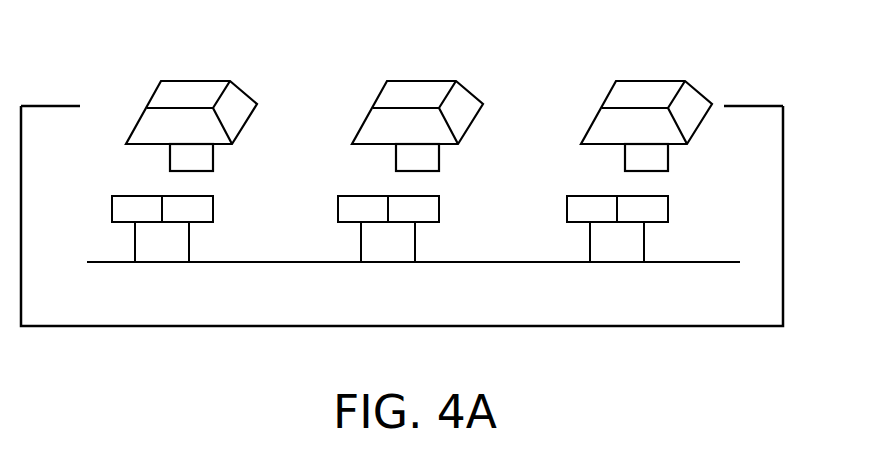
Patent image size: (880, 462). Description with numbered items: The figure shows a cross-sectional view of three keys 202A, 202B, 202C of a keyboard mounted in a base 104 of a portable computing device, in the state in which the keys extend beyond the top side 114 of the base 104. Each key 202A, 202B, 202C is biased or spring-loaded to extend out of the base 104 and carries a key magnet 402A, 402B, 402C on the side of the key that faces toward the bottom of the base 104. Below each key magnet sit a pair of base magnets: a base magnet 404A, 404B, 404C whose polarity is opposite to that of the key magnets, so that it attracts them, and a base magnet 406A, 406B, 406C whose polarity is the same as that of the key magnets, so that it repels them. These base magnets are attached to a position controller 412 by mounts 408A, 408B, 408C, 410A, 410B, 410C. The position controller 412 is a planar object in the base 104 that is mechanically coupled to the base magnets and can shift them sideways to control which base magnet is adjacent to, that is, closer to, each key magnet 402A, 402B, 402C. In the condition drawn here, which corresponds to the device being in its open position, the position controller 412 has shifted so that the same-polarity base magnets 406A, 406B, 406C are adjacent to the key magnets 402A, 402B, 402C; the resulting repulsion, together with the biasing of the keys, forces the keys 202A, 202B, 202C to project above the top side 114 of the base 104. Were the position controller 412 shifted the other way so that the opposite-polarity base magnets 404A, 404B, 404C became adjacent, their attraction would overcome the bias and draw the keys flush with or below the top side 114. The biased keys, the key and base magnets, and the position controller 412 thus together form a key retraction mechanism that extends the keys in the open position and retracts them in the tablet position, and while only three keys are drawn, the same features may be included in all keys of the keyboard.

The top side 114 is at (757, 106).
The base 104 is at (697, 326).
The position controller 412 is at (655, 264).
The key 202A is at (195, 81).
The key 202B is at (421, 81).
The key 202C is at (650, 81).
The key magnet 402A is at (170, 159).
The key magnet 402B is at (396, 159).
The key magnet 402C is at (625, 159).
The base magnet 404A is at (112, 203).
The base magnet 404B is at (338, 203).
The base magnet 404C is at (567, 203).
The base magnet 406A is at (213, 207).
The base magnet 406B is at (439, 207).
The base magnet 406C is at (668, 207).
The mount 408A is at (135, 235).
The mount 408B is at (361, 235).
The mount 408C is at (590, 235).
The mount 410A is at (189, 247).
The mount 410B is at (415, 247).
The mount 410C is at (644, 247).